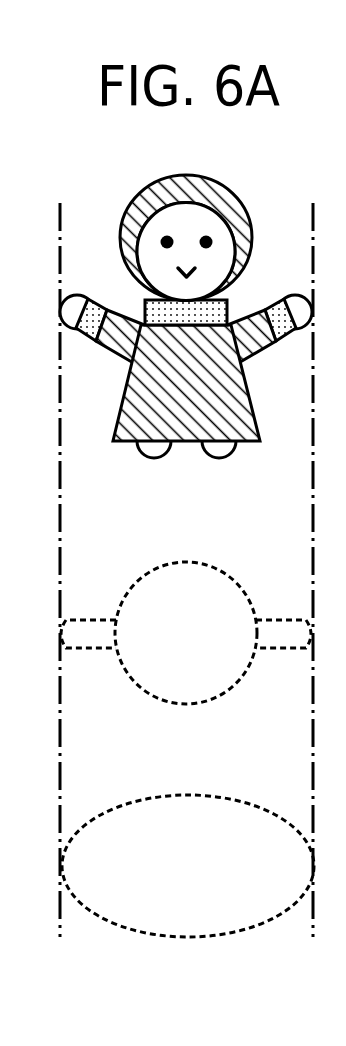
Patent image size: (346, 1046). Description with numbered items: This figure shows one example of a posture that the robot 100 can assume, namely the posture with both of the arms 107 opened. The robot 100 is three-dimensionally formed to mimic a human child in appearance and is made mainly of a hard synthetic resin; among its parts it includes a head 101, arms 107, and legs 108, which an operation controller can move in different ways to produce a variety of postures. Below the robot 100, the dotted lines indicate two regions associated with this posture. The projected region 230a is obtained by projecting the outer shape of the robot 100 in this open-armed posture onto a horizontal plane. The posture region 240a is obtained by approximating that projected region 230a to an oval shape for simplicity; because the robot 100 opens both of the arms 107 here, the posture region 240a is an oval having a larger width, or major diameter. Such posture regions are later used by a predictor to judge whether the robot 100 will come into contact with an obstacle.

The robot 100 is at (278, 170).
The head 101 is at (141, 200).
The arms 107 is at (75, 294).
The legs 108 is at (143, 460).
The projected region 230a is at (128, 672).
The posture region 240a is at (255, 807).